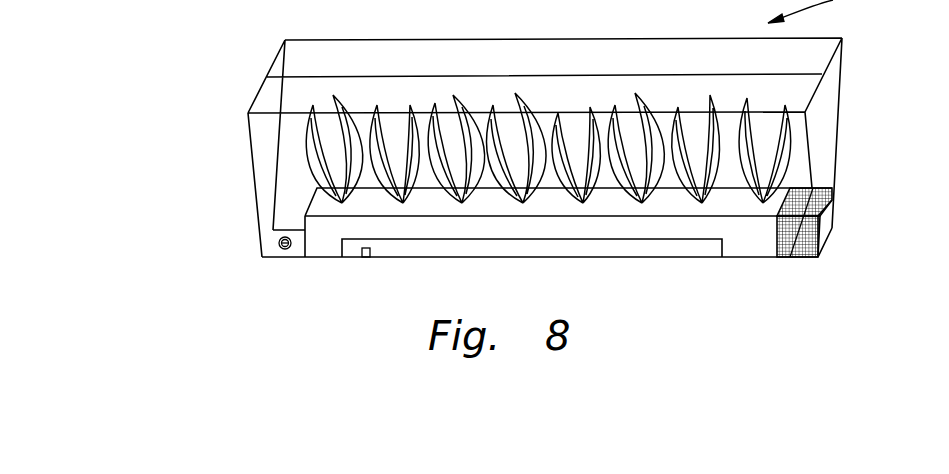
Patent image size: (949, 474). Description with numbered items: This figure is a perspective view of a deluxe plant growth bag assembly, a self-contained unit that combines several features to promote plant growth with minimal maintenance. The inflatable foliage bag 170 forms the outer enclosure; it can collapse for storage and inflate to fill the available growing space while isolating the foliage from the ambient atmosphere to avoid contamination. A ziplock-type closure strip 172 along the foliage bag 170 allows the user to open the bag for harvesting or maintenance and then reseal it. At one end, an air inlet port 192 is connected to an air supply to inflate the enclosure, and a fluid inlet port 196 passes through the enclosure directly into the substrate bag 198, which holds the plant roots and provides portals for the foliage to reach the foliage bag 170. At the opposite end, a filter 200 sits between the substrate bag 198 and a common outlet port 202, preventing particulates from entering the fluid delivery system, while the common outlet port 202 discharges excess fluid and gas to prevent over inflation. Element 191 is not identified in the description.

The foliage bag 170 is at (828, 89).
The closure strip 172 is at (638, 85).
The screw 191 is at (279, 245).
The air inlet port 192 is at (291, 246).
The fluid inlet port 196 is at (366, 258).
The substrate bag 198 is at (656, 262).
The filter 200 is at (790, 258).
The common outlet port 202 is at (812, 258).